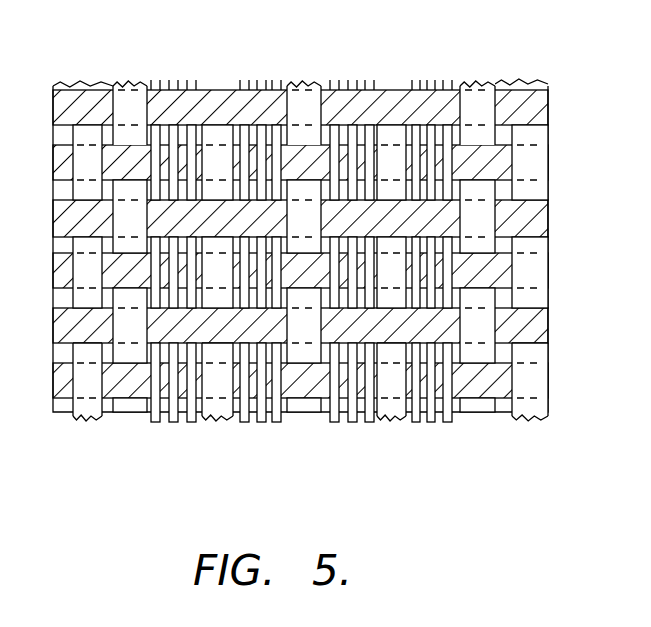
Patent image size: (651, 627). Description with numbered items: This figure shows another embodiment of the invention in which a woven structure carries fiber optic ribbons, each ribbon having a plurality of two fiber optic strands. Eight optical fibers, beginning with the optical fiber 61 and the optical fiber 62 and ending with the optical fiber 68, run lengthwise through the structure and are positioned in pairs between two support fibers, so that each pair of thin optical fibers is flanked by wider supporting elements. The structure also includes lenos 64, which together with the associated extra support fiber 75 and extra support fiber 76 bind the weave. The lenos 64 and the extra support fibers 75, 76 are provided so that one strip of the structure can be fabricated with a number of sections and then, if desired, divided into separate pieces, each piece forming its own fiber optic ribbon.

The optical fiber 61 is at (171, 422).
The optical fiber 62 is at (190, 422).
The leno 64 is at (108, 88).
The optical fiber 68 is at (452, 420).
The extra support fiber 75 is at (89, 420).
The extra support fiber 76 is at (540, 386).